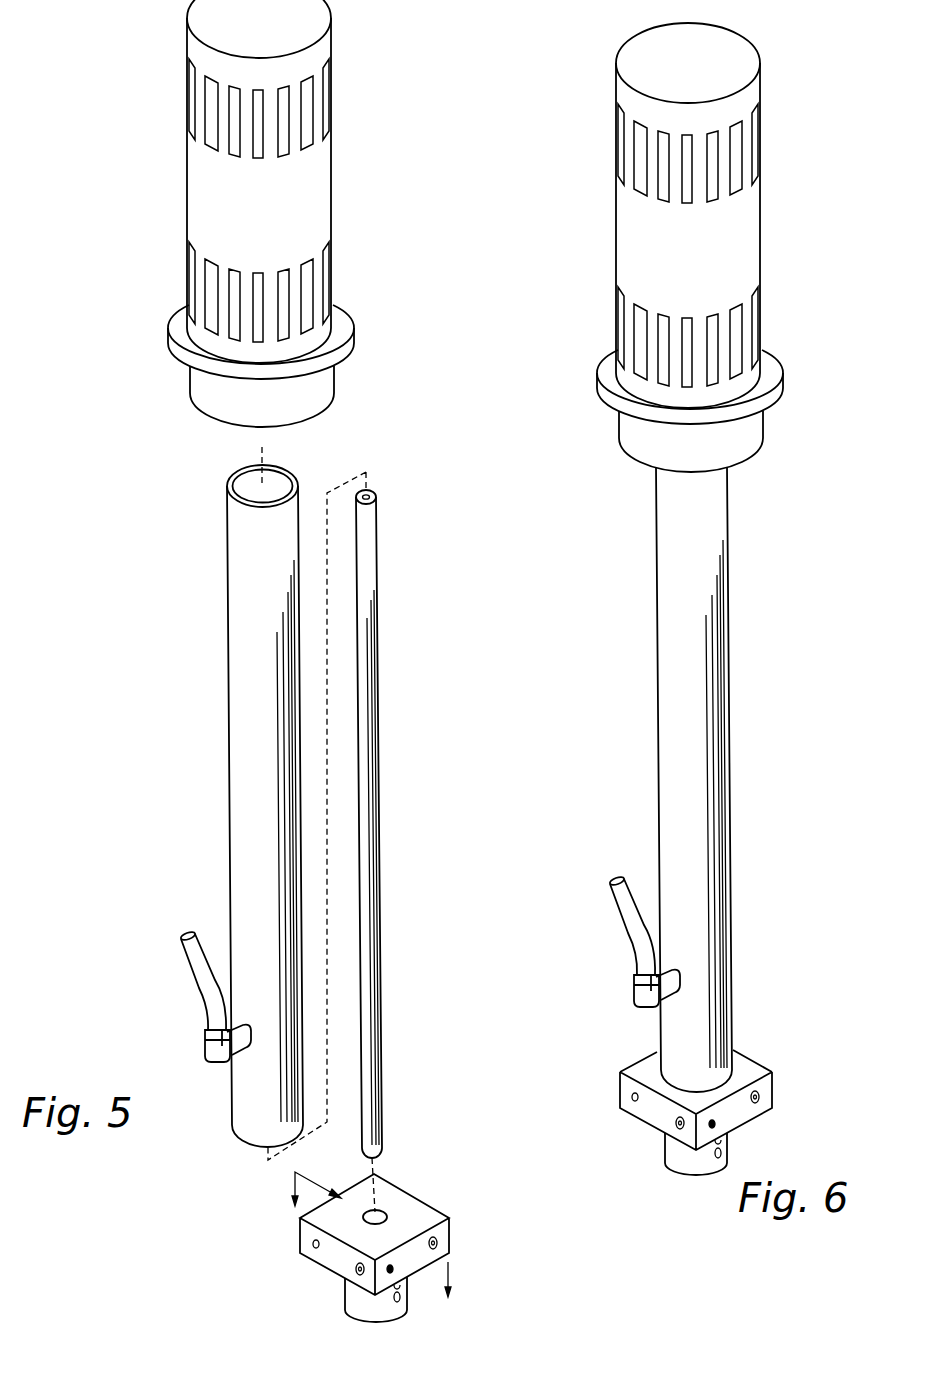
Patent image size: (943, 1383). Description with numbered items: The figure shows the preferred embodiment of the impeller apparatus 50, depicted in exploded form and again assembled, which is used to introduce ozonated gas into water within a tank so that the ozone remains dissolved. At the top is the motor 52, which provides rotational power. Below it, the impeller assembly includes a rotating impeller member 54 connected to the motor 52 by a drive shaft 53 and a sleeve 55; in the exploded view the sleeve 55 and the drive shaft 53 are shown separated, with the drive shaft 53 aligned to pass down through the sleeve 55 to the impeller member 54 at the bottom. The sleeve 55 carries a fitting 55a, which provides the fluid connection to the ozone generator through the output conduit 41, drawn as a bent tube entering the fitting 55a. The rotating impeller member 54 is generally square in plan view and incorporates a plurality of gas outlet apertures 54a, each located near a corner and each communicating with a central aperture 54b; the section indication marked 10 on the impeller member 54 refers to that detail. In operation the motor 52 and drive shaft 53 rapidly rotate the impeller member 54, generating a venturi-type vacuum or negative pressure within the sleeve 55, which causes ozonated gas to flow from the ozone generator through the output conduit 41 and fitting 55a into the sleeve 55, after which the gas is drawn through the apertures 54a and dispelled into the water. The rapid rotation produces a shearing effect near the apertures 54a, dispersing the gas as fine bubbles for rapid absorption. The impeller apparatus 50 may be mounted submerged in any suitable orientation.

In FIG. 5, the impeller apparatus 50 is at (142, 194).
In FIG. 6, the impeller apparatus 50 is at (568, 239).
In FIG. 5, the motor 52 is at (213, 288).
In FIG. 6, the motor 52 is at (662, 330).
In FIG. 5, the drive shaft 53 is at (388, 877).
In FIG. 5, the rotating impeller member 54 is at (452, 1228).
In FIG. 6, the rotating impeller member 54 is at (752, 1071).
In FIG. 5, the gas outlet apertures 54a is at (358, 1272).
In FIG. 6, the gas outlet apertures 54a is at (762, 1097).
In FIG. 5, the central aperture 54b is at (387, 1218).
In FIG. 5, the sleeve 55 is at (240, 828).
In FIG. 6, the sleeve 55 is at (665, 775).
In FIG. 5, the fitting 55a is at (207, 1053).
In FIG. 6, the fitting 55a is at (638, 998).
In FIG. 5, the output conduit 41 is at (192, 977).
In FIG. 6, the output conduit 41 is at (620, 924).
In FIG. 5, the section line 10 is at (373, 1239).